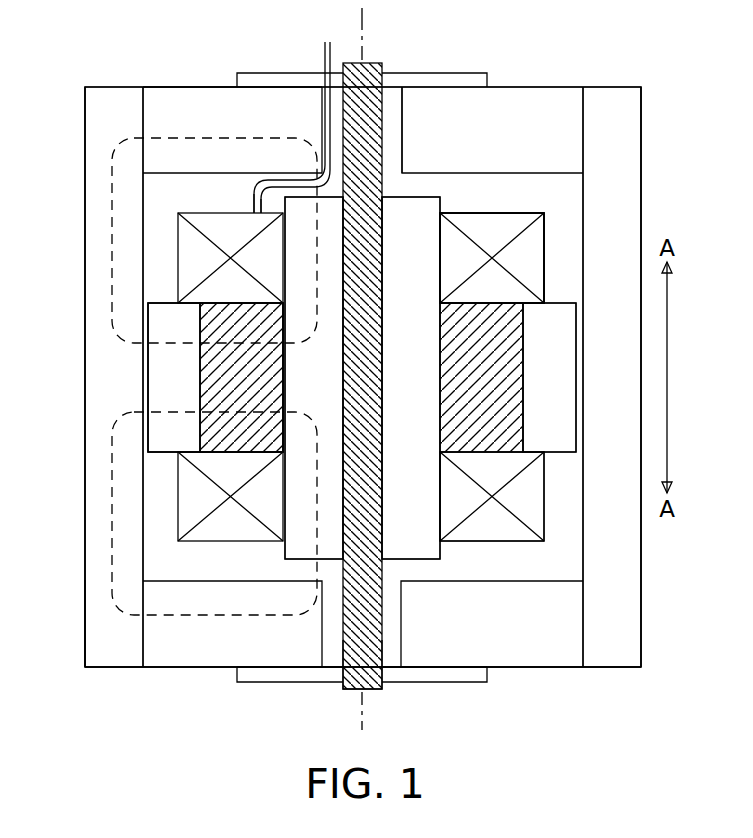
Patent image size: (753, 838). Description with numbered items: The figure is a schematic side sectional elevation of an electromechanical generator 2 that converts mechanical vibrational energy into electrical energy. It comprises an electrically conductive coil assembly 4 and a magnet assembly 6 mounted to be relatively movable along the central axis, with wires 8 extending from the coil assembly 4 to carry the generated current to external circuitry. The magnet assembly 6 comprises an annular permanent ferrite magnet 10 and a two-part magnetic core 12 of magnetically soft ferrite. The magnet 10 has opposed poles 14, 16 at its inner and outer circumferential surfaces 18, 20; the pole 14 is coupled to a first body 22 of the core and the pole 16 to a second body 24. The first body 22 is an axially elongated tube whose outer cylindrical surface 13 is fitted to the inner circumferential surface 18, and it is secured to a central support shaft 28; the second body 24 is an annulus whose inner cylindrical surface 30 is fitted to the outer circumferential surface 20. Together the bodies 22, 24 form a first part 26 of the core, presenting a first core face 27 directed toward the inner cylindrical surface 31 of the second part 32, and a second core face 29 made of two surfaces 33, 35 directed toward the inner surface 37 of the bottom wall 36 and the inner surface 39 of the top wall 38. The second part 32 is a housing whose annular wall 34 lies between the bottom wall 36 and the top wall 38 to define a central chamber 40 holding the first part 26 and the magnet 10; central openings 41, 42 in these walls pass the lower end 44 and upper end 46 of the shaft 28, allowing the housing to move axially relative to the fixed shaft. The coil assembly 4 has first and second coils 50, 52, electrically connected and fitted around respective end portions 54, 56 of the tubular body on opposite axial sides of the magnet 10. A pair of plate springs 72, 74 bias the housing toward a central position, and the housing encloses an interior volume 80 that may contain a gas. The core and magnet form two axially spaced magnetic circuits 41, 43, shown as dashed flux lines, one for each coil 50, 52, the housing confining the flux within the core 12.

The electromechanical generator 2 is at (88, 68).
The electrically conductive coil assembly 4 is at (545, 223).
The magnet assembly 6 is at (200, 438).
The wires 8 is at (325, 45).
The annular magnet 10 is at (217, 330).
The two-part magnetic core 12 is at (93, 272).
The outer cylindrical surface 13 is at (443, 553).
The pole 14 is at (283, 303).
The pole 16 is at (200, 390).
The inner circumferential surface 18 is at (285, 418).
The outer circumferential surface 20 is at (200, 358).
The first body 22 is at (463, 173).
The second body 24 is at (565, 368).
The first part 26 is at (565, 413).
The first core face 27 is at (148, 421).
The support shaft 28 is at (343, 685).
The second core face 29 is at (450, 213).
The inner cylindrical surface 30 is at (513, 345).
The inner cylindrical surface 31 is at (577, 513).
The second part 32 is at (93, 645).
The surface 33 is at (330, 560).
The annular wall 34 is at (93, 597).
The surface 35 is at (425, 197).
The bottom wall 36 is at (160, 653).
The inner surface 37 is at (430, 573).
The top wall 38 is at (165, 95).
The inner surface 39 is at (252, 219).
The central chamber 40 is at (532, 212).
The central opening 41 is at (207, 620).
The central opening 42 is at (392, 197).
The magnetic circuit 43 is at (112, 175).
The lower end 44 is at (375, 690).
The upper end 46 is at (372, 62).
The first coil 50 is at (230, 543).
The second coil 52 is at (178, 235).
The end portion 54 is at (432, 518).
The end portion 56 is at (460, 197).
The plate spring 72 is at (475, 685).
The plate spring 74 is at (253, 73).
The interior volume 80 is at (510, 213).